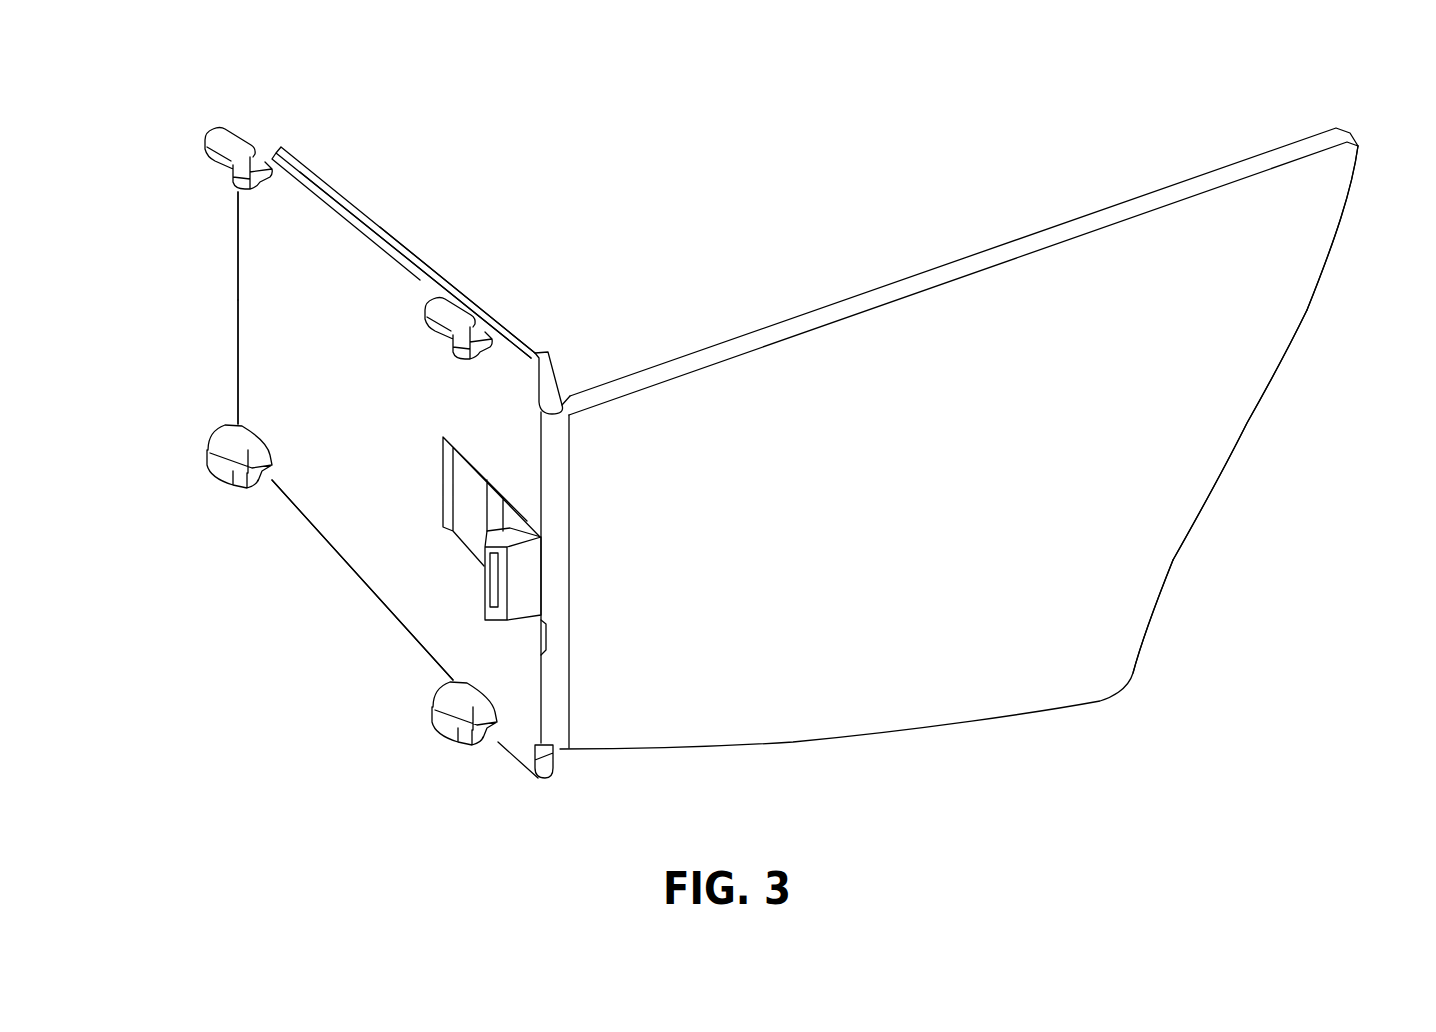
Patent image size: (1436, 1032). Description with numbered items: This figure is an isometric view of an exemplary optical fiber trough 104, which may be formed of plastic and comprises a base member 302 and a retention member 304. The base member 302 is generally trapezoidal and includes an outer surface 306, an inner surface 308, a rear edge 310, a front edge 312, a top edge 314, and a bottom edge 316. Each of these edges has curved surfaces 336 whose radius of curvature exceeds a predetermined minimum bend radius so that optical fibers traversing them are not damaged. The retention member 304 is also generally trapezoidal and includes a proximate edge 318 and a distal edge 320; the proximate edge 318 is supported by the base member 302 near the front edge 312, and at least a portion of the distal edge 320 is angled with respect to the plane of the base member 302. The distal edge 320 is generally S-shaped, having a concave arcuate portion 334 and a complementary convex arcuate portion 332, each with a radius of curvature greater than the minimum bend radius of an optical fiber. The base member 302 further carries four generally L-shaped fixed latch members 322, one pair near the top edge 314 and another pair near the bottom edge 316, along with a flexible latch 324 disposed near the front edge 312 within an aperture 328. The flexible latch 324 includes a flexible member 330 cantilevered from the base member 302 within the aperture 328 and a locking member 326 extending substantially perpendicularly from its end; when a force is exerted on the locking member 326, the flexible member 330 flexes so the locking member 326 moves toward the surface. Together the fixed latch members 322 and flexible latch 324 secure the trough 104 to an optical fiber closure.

The optical fiber trough 104 is at (887, 111).
The base member 302 is at (305, 495).
The retention member 304 is at (918, 717).
The outer surface 306 is at (240, 319).
The inner surface 308 is at (430, 267).
The rear edge 310 is at (237, 241).
The front edge 312 is at (563, 733).
The top edge 314 is at (325, 182).
The bottom edge 316 is at (433, 660).
The proximate edge 318 is at (562, 407).
The distal edge 320 is at (1250, 418).
The fixed latch members 322 is at (234, 137).
The flexible latch 324 is at (428, 447).
The locking member 326 is at (545, 625).
The aperture 328 is at (468, 538).
The flexible member 330 is at (470, 487).
The convex arcuate portion 332 is at (1338, 250).
The concave arcuate portion 334 is at (1177, 560).
The curved surfaces 336 is at (375, 222).